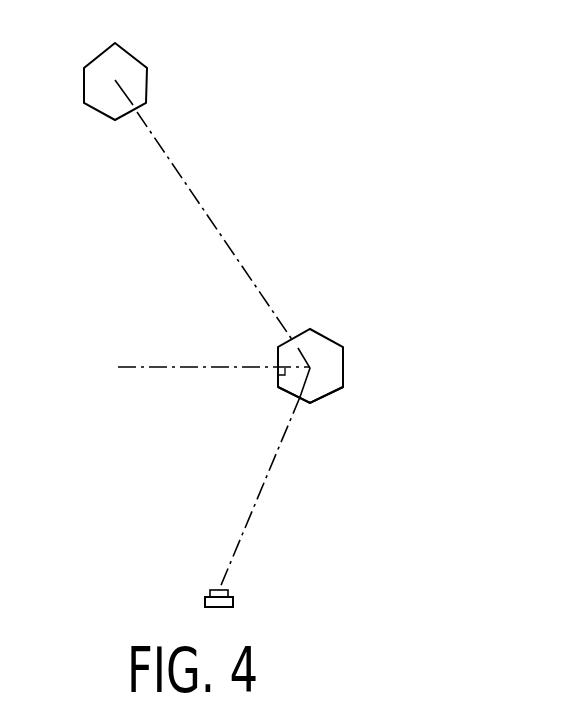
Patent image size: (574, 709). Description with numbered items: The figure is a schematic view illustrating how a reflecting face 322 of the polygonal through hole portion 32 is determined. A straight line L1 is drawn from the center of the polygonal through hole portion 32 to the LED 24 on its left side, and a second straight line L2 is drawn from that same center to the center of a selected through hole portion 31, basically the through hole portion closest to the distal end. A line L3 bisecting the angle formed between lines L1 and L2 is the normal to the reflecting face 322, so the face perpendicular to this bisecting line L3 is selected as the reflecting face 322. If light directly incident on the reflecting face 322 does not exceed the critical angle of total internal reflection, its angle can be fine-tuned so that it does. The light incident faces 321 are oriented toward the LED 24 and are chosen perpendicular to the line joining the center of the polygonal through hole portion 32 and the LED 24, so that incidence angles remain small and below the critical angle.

The through hole portion 31 is at (147, 69).
The polygonal through hole portion 32 is at (327, 337).
The light incident face 321 is at (295, 395).
The reflecting face 322 is at (277, 358).
The LED 24 is at (233, 598).
The straight line L1 is at (265, 485).
The straight line L2 is at (217, 223).
The bisecting line L3 is at (182, 367).